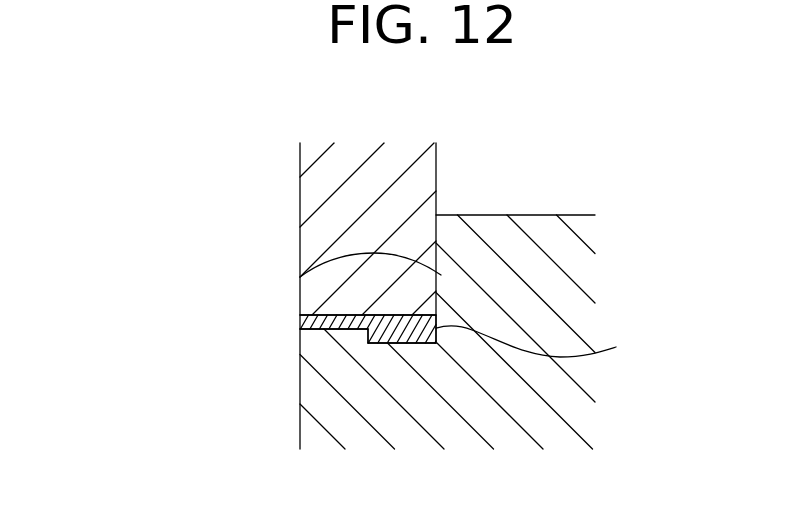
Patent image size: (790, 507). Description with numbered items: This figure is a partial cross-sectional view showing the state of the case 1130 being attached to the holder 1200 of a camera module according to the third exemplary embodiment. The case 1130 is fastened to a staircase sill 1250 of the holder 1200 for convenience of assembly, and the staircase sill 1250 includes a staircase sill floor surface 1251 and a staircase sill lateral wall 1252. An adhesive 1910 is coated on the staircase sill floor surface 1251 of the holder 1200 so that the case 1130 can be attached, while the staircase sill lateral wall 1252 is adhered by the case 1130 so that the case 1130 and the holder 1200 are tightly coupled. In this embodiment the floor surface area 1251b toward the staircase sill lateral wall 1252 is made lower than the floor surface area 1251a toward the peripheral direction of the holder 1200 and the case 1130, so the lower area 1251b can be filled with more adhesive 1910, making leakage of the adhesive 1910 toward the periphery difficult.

The case 1130 is at (313, 179).
The holder 1200 is at (510, 234).
The staircase sill 1250 is at (135, 255).
The staircase sill lateral wall 1252 is at (300, 277).
The staircase sill floor surface 1251 is at (208, 332).
The floor surface area toward the peripheral direction 1251a is at (334, 330).
The floor surface area toward the lateral wall 1251b is at (403, 344).
The adhesive 1910 is at (552, 342).